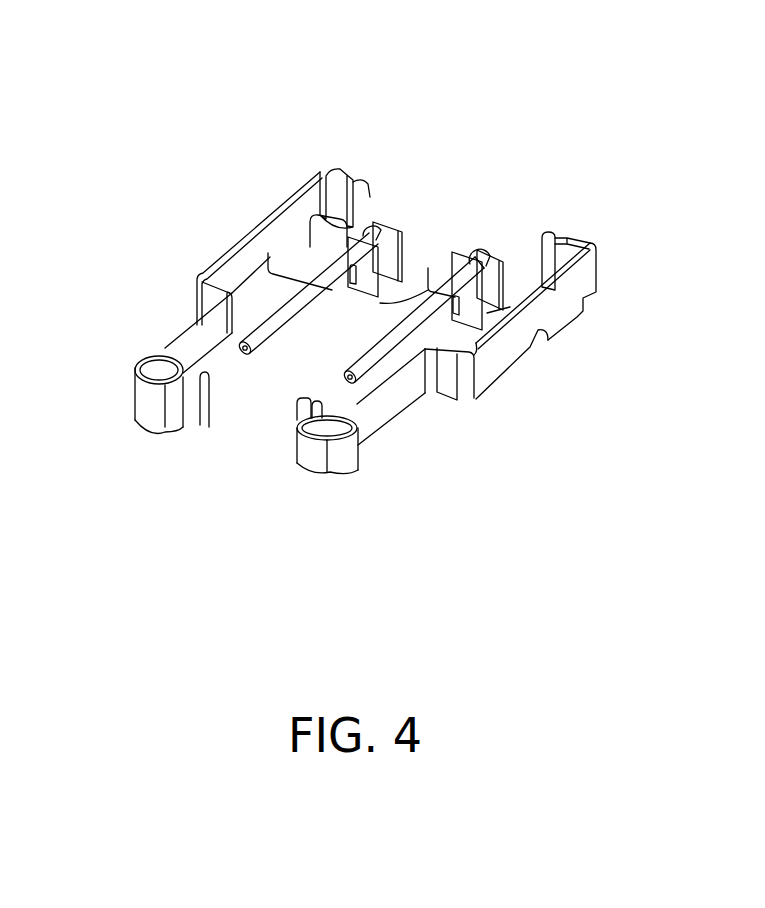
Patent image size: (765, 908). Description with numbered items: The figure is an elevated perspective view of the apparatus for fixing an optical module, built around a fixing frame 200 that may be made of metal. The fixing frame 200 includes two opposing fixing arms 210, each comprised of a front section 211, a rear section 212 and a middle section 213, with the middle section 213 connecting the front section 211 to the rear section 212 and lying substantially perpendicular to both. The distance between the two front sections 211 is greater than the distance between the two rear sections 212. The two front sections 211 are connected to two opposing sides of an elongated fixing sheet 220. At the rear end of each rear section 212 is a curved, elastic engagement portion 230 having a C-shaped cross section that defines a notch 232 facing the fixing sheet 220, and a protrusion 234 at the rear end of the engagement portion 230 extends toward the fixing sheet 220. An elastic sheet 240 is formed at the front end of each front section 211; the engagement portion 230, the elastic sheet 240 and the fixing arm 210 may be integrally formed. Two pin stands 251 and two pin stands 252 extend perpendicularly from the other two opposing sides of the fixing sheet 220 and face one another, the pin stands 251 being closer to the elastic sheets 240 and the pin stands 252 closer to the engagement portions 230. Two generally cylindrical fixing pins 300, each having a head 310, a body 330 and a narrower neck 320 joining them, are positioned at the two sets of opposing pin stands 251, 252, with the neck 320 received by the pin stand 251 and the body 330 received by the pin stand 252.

The fixing frame 200 is at (228, 112).
The fixing arm 210 is at (215, 245).
The front section 211 is at (265, 235).
The rear section 212 is at (183, 327).
The middle section 213 is at (185, 292).
The fixing sheet 220 is at (407, 293).
The engagement portion 230 is at (152, 415).
The notch 232 is at (153, 370).
The protrusion 234 is at (210, 422).
The elastic sheet 240 is at (350, 187).
The pin stand 251 is at (387, 250).
The pin stand 252 is at (363, 285).
The fixing pin 300 is at (333, 378).
The head 310 is at (490, 267).
The neck 320 is at (376, 222).
The body 330 is at (380, 350).